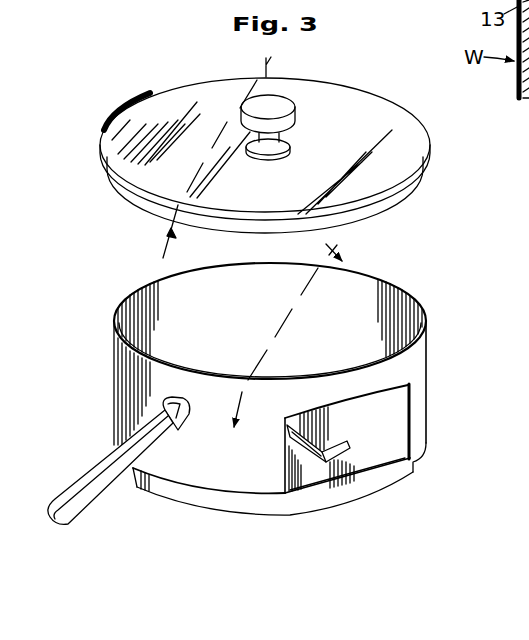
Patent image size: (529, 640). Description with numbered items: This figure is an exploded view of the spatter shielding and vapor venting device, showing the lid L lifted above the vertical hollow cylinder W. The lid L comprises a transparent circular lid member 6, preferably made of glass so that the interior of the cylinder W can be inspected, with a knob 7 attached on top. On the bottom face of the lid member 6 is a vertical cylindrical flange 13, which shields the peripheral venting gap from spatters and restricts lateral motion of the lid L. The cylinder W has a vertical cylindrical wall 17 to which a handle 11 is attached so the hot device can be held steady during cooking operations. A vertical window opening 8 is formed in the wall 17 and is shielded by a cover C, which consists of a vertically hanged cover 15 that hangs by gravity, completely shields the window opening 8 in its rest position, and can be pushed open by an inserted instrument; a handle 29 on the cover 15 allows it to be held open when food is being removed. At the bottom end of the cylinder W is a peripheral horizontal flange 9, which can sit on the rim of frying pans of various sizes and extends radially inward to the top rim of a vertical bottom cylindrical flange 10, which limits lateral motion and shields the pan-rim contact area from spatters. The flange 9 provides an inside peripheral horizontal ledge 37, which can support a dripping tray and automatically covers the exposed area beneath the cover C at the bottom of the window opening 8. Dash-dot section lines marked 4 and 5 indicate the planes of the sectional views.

The section line 4- 4 is at (208, 157).
The section line 5- 5 is at (276, 333).
The transparent circular lid member 6 is at (430, 147).
The knob 7 is at (290, 101).
The vertical window opening 8 is at (410, 429).
The peripheral horizontal flange 9 is at (421, 463).
The vertical bottom cylindrical flange 10 is at (378, 493).
The handle 11 is at (96, 508).
The vertical cylindrical flange 13 is at (397, 202).
The vertically hanged cover 15 is at (387, 420).
The vertical cylindrical wall 17 is at (420, 358).
The handle for cover 29 is at (316, 455).
The inside peripheral horizontal ledge 37 is at (343, 484).
The lid L is at (130, 97).
The vertical hollow cylinder W is at (112, 380).
The cover C is at (363, 419).